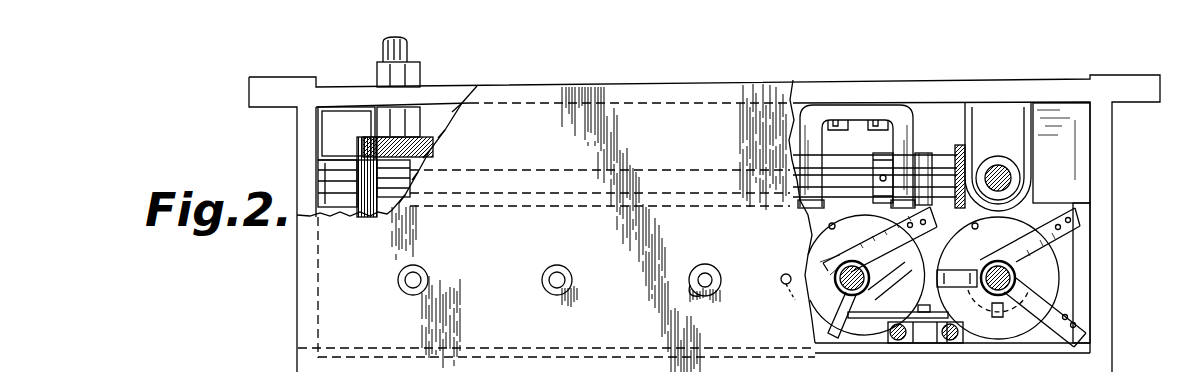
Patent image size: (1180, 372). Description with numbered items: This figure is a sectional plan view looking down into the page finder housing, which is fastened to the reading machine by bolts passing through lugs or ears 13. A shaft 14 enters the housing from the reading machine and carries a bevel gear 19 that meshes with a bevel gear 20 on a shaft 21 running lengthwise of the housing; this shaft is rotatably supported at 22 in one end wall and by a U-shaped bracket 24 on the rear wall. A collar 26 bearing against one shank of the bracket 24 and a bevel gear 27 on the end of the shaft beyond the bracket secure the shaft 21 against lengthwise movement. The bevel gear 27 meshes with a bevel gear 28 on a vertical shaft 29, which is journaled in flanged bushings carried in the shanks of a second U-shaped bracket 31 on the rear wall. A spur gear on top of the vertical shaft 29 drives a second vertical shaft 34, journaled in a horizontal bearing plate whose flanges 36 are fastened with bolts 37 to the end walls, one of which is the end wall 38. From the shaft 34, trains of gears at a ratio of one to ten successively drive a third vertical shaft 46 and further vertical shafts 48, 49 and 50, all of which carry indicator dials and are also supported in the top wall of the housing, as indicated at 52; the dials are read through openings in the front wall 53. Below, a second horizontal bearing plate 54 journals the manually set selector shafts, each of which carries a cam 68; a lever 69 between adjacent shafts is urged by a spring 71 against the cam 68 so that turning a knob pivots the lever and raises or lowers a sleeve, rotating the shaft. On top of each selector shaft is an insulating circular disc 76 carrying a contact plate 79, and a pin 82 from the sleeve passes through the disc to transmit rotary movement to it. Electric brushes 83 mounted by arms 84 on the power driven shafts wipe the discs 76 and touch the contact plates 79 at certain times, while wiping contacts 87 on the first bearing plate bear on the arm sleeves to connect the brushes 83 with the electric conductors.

The lugs or ears 13 is at (249, 78).
The shaft 14 is at (383, 47).
The bevel gear 19 is at (432, 139).
The bevel gear 20 is at (357, 148).
The shaft 21 is at (410, 177).
The rotatable support 22 is at (318, 160).
The U-shaped bracket 24 is at (857, 112).
The collar 26 is at (880, 156).
The bevel gear 27 is at (962, 148).
The bevel gear 28 is at (1027, 173).
The vertical shaft 29 is at (1000, 170).
The second U-shaped bracket 31 is at (1020, 133).
The second vertical shaft 34 is at (1027, 267).
The flanges 36 is at (1083, 267).
The bolts 37 is at (1033, 260).
The end wall 38 is at (1100, 307).
The third vertical shaft 46 is at (800, 262).
The vertical shaft 48 is at (705, 266).
The vertical shaft 49 is at (559, 279).
The vertical shaft 50 is at (416, 279).
The top wall support 52 is at (701, 303).
The front wall 53 is at (298, 367).
The second horizontal bearing plate 54 is at (1033, 207).
The cam 68 is at (880, 302).
The lever 69 is at (890, 333).
The spring 71 is at (934, 308).
The circular disc 76 is at (830, 225).
The contact plate 79 is at (845, 313).
The pin 82 is at (813, 287).
The electric brushes 83 is at (890, 280).
The arms 84 is at (960, 272).
The wiping contacts 87 is at (860, 240).